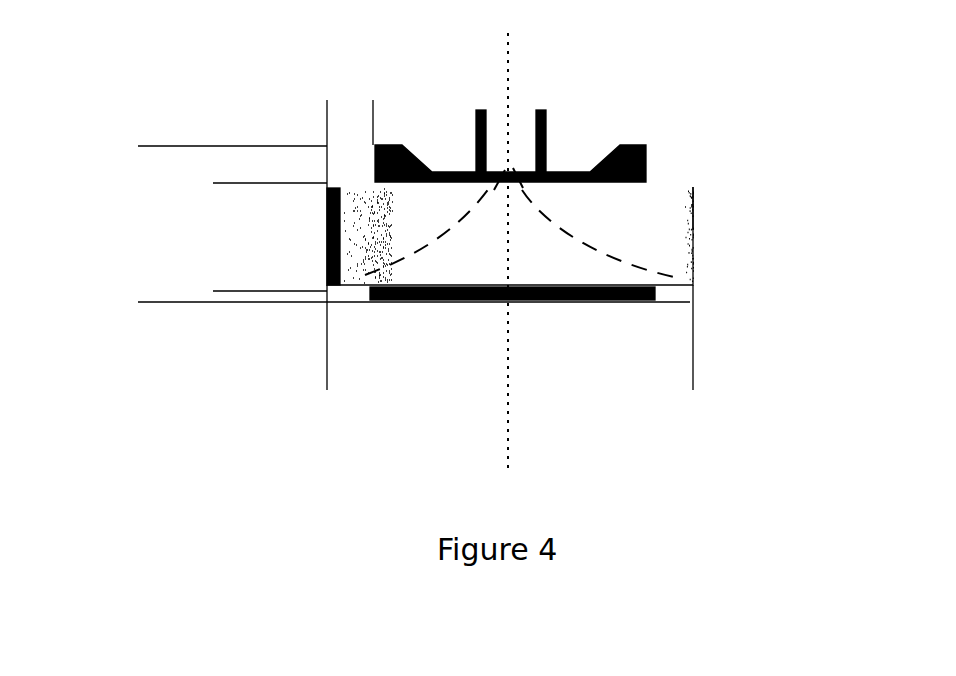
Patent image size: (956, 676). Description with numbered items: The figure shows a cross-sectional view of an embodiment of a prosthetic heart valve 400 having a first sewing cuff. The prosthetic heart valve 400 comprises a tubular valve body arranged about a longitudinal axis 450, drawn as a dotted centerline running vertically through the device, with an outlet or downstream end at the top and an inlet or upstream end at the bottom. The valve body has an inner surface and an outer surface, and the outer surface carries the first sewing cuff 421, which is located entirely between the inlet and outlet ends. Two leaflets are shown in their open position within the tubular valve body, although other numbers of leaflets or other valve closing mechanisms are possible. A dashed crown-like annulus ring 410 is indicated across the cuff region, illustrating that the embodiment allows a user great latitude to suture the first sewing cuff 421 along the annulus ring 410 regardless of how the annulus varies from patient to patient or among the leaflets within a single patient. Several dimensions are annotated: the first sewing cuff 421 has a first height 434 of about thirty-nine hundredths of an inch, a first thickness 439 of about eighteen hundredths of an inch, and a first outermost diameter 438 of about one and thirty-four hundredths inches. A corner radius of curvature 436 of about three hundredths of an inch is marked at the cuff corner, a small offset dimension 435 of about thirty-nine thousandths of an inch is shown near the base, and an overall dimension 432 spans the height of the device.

The prosthetic heart valve 400 is at (100, 82).
The crown-like annulus ring 410 is at (538, 200).
The first sewing cuff 421 is at (673, 243).
The dimension 432 is at (151, 146).
The first height 434 is at (223, 183).
The dimension 435 is at (300, 245).
The radius of curvature dimension 436 is at (695, 184).
The first outermost diameter 438 is at (693, 377).
The first thickness 439 is at (373, 115).
The longitudinal axis 450 is at (507, 72).